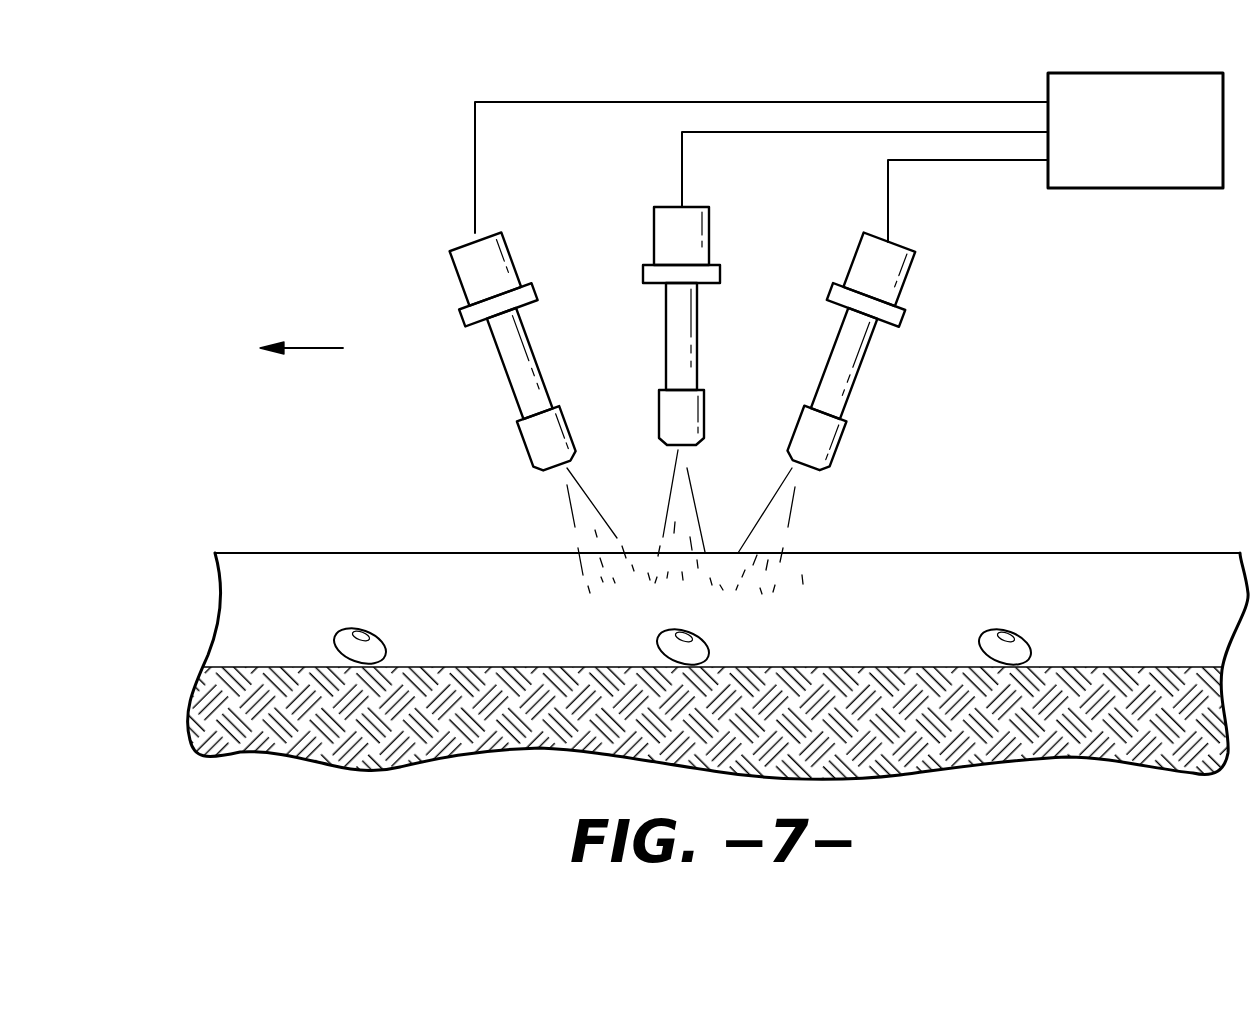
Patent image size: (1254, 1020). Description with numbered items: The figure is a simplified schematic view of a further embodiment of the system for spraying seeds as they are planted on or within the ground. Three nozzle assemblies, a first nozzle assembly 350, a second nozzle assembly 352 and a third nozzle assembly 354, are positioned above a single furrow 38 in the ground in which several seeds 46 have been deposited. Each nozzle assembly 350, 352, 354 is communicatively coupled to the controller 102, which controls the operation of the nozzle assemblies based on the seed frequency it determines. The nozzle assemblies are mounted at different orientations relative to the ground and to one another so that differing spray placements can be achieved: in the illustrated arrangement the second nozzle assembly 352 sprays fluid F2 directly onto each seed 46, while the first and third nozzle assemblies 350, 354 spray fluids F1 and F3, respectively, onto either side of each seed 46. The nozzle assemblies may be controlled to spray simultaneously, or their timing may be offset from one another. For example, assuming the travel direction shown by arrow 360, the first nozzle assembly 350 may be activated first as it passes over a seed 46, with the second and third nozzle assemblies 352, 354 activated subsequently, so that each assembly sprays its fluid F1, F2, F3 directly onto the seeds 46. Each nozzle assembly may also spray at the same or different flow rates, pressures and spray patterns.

The controller 102 is at (1112, 144).
The first nozzle assembly 350 is at (518, 395).
The second nozzle assembly 352 is at (668, 355).
The third nozzle assembly 354 is at (850, 390).
The arrow 360 is at (308, 348).
The furrow 38 is at (1113, 572).
The seeds 46 is at (376, 651).
The fluid F1 is at (573, 525).
The fluid F2 is at (670, 505).
The fluid F3 is at (790, 527).